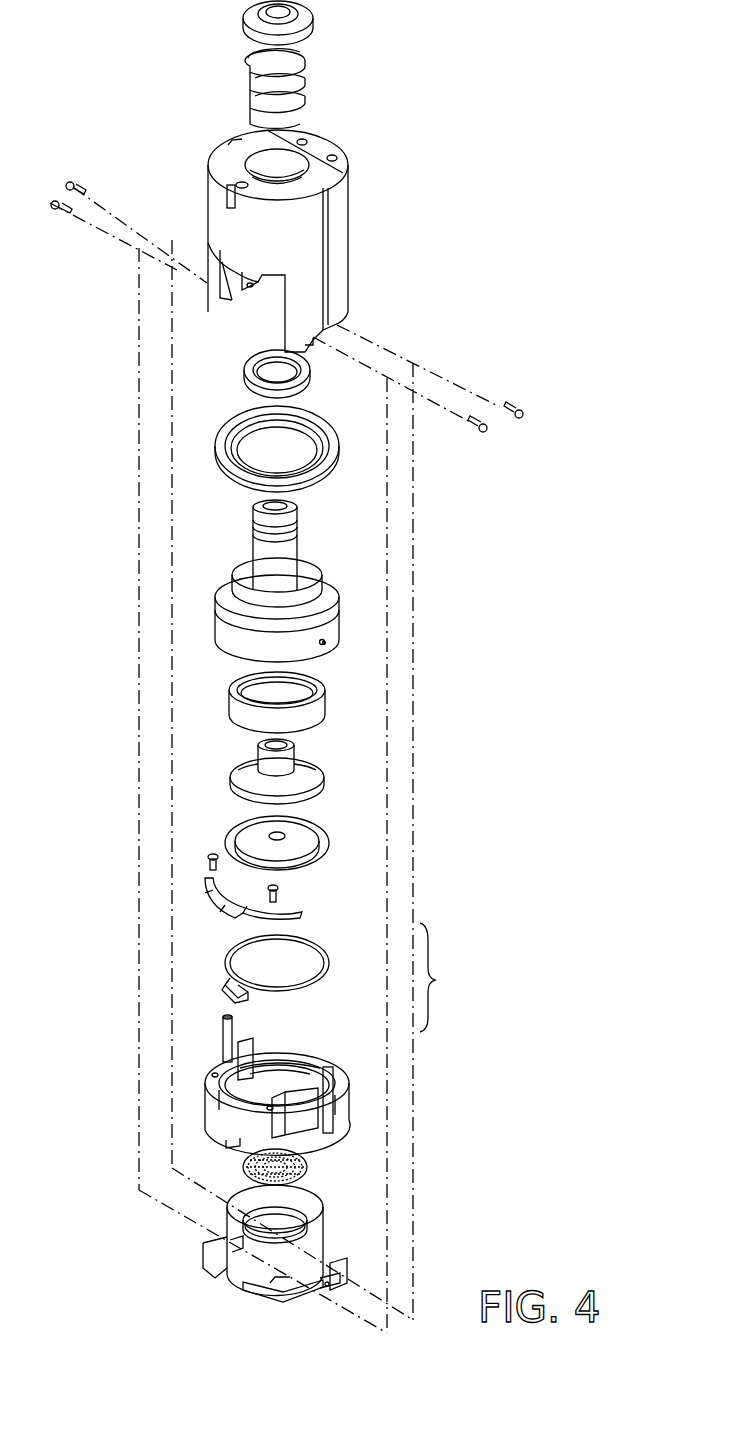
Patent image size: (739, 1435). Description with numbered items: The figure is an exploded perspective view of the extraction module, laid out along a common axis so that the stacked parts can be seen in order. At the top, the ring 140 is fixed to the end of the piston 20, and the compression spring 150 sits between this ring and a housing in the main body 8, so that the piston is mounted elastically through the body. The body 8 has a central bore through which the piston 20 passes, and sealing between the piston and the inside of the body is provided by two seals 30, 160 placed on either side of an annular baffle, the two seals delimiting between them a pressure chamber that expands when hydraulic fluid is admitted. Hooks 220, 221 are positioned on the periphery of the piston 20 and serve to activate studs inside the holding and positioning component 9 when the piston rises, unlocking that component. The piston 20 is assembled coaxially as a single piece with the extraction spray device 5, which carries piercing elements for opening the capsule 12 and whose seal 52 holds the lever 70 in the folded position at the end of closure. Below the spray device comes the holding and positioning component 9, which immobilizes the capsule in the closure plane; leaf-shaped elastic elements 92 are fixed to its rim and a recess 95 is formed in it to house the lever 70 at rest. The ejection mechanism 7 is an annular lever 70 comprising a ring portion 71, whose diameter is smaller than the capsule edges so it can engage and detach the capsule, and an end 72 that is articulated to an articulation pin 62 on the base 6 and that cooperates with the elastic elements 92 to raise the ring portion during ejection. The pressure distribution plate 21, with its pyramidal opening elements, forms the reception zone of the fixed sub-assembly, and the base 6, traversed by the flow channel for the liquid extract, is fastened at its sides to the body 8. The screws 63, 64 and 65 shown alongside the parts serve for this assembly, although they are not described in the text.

The ring 140 is at (245, 14).
The compression spring 150 is at (247, 76).
The main body 8 is at (350, 220).
The screws 64 is at (66, 183).
The screws 63 is at (522, 410).
The seal 160 is at (252, 362).
The seal 30 is at (320, 478).
The piston 20 is at (228, 572).
The hook 220 is at (325, 643).
The hook 221 is at (324, 643).
The seal 52 is at (322, 722).
The extraction spray device 5 is at (238, 764).
The capsule 12 is at (232, 824).
The screws 65 is at (280, 890).
The elastic elements 92 is at (300, 916).
The lever 70 is at (281, 986).
The ring portion 71 is at (328, 955).
The end 72 is at (225, 983).
The ejection mechanism 7 is at (435, 977).
The holding and positioning component 9 is at (289, 1089).
The recess 95 is at (285, 1063).
The pressure distribution plate 21 is at (307, 1167).
The base 6 is at (291, 1254).
The articulation pin 62 is at (235, 1275).